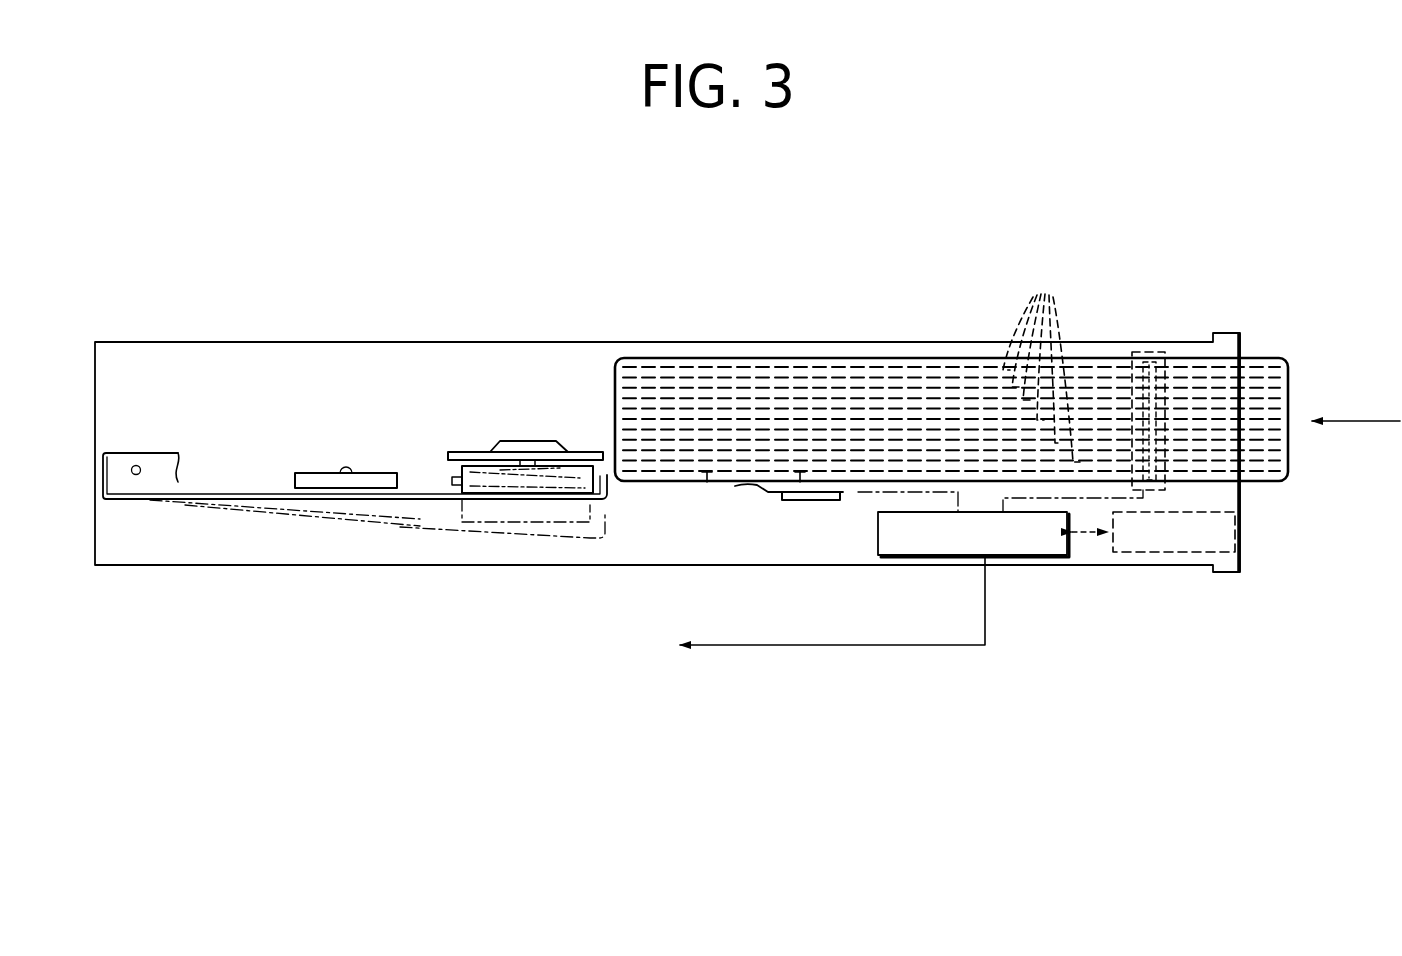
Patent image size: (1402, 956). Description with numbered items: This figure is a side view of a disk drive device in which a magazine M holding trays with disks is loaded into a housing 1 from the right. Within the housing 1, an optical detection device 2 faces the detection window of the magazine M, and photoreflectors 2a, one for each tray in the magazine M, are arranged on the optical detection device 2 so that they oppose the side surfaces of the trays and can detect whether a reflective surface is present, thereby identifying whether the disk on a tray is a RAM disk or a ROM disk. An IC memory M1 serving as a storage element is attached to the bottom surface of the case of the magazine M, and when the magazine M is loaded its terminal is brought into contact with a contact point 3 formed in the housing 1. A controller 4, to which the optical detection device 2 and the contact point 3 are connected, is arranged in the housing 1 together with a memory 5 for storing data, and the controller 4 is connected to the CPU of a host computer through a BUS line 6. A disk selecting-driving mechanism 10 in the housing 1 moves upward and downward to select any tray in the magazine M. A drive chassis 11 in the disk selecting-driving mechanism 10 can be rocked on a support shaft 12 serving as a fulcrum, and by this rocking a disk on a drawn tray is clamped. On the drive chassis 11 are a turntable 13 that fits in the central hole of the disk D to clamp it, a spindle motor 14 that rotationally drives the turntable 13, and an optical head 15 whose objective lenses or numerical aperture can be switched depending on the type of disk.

The housing 1 is at (405, 332).
The optical detection device 2 is at (1163, 352).
The photoreflectors 2a is at (1145, 352).
The contact point 3 is at (755, 487).
The controller 4 is at (1036, 557).
The memory (RAM) 5 is at (1172, 553).
The BUS line 6 is at (988, 628).
The disk selecting-driving mechanism 10 is at (295, 528).
The drive chassis 11 is at (415, 518).
The support shaft 12 is at (136, 464).
The turntable 13 is at (515, 446).
The spindle motor 14 is at (580, 468).
The optical head 15 is at (373, 472).
The magazine M is at (750, 357).
The IC memory M1 is at (707, 483).
The disk D is at (1041, 358).